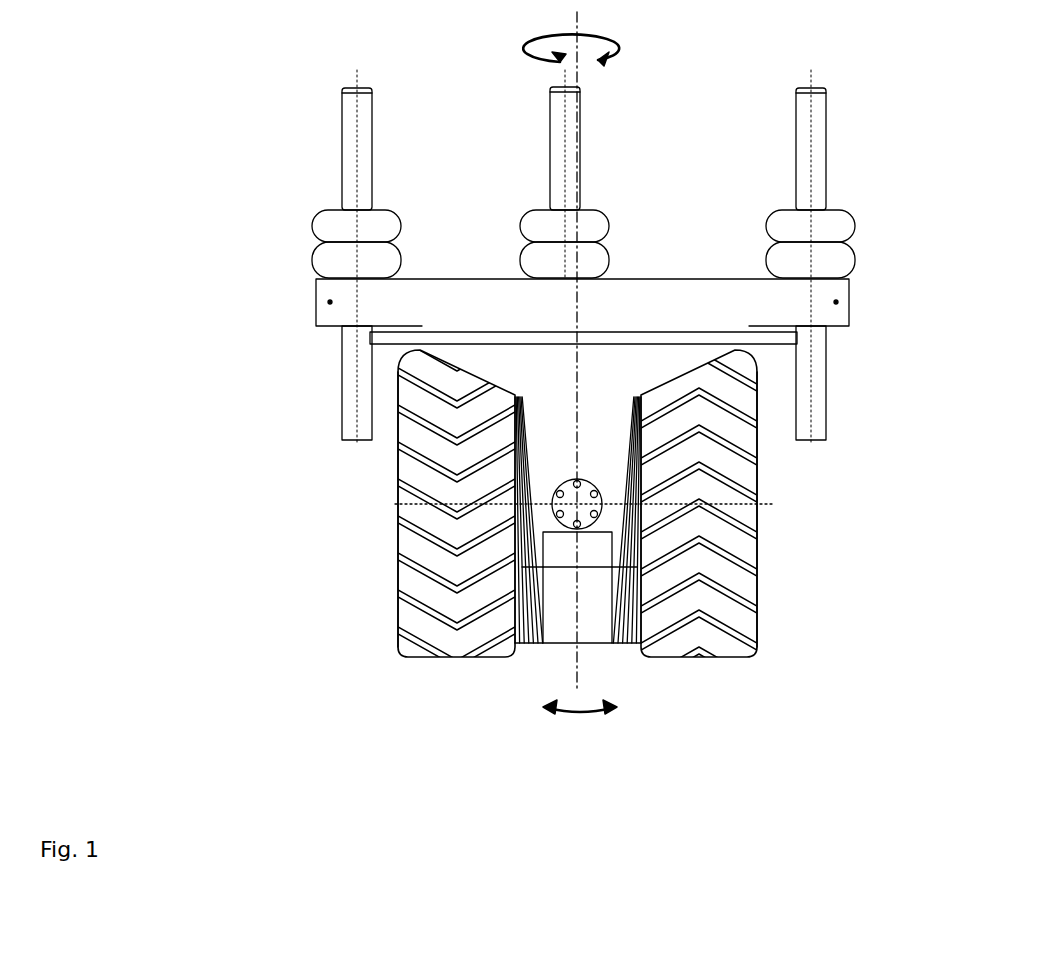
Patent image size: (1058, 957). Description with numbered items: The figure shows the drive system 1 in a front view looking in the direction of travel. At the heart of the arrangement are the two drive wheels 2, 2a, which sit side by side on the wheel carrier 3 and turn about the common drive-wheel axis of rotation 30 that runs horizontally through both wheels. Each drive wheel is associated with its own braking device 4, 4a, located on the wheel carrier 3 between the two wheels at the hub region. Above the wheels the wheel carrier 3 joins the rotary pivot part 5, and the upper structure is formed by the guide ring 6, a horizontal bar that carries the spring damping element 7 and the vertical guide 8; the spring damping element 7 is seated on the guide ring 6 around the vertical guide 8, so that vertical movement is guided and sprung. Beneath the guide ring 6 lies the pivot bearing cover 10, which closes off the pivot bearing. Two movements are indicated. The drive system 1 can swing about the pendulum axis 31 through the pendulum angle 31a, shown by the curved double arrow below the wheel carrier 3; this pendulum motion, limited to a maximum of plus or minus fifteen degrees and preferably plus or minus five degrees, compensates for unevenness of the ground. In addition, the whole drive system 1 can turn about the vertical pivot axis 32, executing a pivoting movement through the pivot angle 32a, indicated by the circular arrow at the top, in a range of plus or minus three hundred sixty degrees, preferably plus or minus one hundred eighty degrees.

The drive system 1 is at (225, 282).
The drive wheel 2 is at (408, 483).
The drive wheel 2a is at (718, 485).
The wheel carrier 3 is at (565, 615).
The braking device 4 is at (520, 647).
The braking device 4a is at (632, 647).
The rotary pivot part 5 is at (545, 423).
The guide ring 6 is at (394, 300).
The spring damping element 7 is at (333, 224).
The vertical guide 8 is at (347, 167).
The pivot bearing cover 10 is at (777, 337).
The drive-wheel axis of rotation 30 is at (385, 506).
The pendulum axis 31 is at (755, 548).
The pendulum angle 31a is at (592, 715).
The pivot axis 32 is at (578, 372).
The pivot angle 32a is at (620, 60).